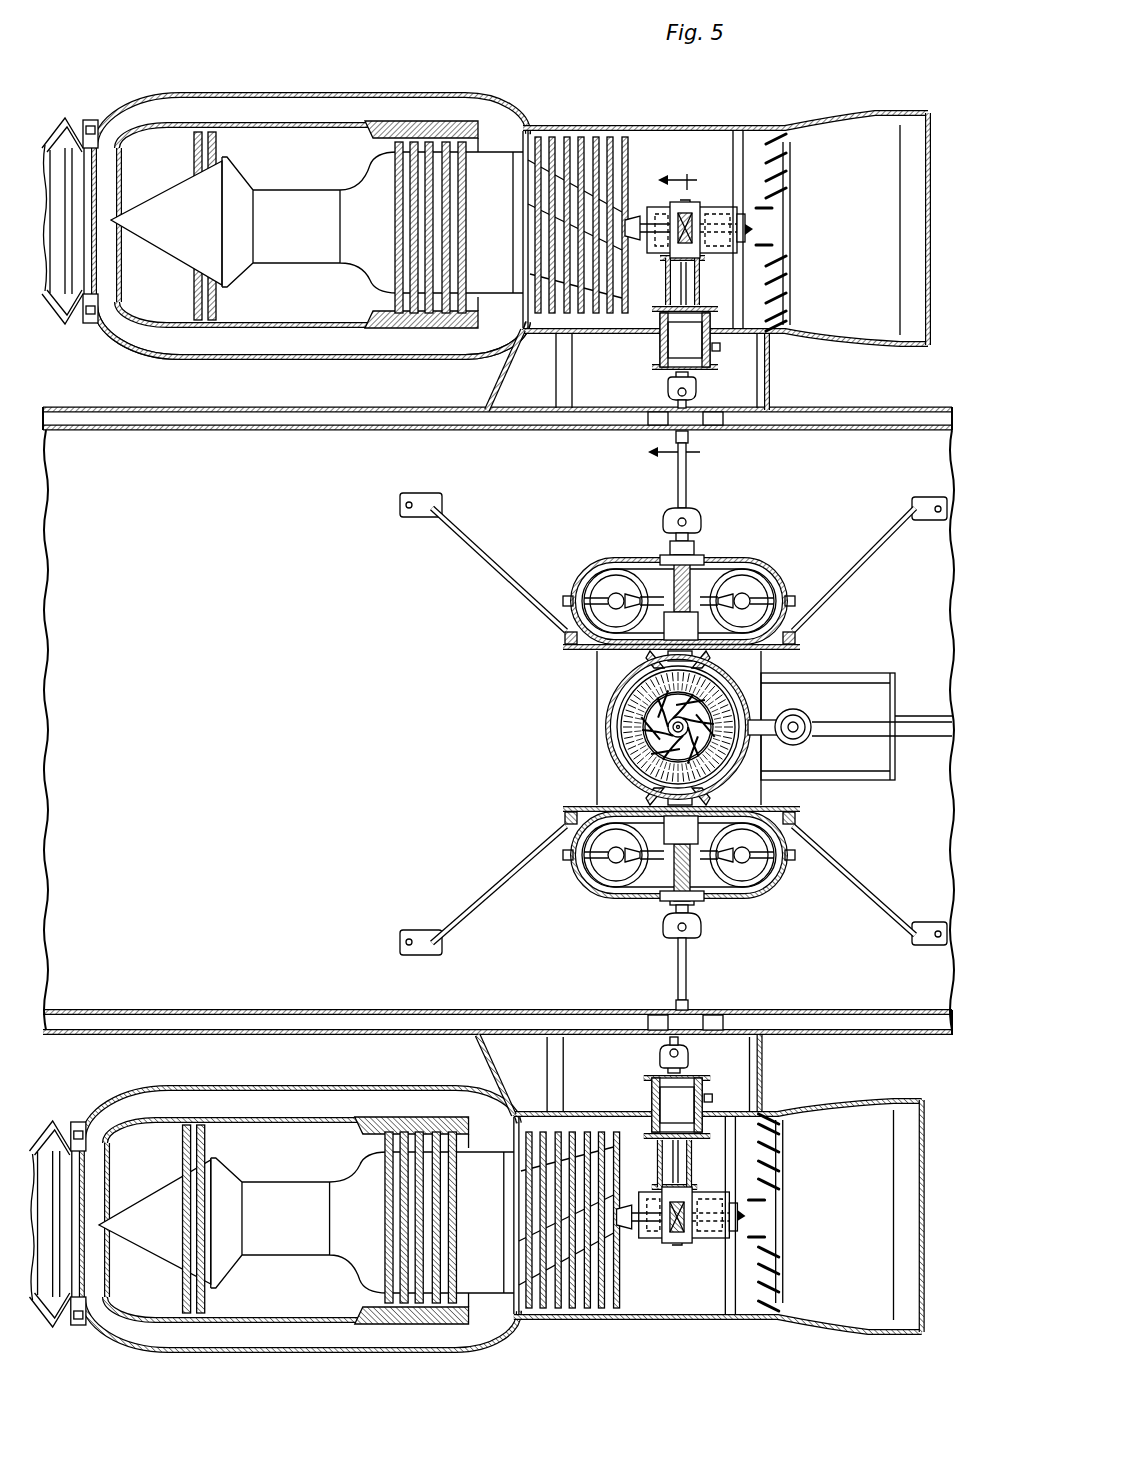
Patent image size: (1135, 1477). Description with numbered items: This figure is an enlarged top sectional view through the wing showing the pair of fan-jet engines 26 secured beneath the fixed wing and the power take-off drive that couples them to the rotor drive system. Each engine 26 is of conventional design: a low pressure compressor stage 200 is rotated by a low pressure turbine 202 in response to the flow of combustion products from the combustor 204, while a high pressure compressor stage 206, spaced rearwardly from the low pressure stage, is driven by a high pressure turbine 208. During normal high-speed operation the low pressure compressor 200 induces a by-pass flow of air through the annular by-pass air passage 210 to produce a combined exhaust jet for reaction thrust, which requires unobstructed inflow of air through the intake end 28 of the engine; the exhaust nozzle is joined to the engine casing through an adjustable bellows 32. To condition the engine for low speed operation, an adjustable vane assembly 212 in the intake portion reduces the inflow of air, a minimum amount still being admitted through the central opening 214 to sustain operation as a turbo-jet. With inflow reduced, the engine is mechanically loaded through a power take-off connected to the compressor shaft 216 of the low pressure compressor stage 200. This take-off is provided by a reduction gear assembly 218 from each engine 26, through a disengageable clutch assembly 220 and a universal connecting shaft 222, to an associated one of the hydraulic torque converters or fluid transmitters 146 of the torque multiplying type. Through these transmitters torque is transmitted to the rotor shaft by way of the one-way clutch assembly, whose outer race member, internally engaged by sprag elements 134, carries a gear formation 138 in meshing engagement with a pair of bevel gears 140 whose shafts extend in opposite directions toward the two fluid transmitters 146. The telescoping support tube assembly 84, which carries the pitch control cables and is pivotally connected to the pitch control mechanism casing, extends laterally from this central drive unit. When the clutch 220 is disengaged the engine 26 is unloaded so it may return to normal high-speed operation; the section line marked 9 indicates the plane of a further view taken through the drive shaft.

The fan-jet engine 26 is at (367, 86).
The intake end 28 is at (907, 312).
The adjustable bellows 32 is at (50, 142).
The section line 9 is at (680, 320).
The telescoping support tube assembly 84 is at (917, 728).
The sprag elements 134 is at (713, 760).
The gear formation 138 is at (627, 728).
The bevel gears 140 is at (648, 676).
The fluid transmitters 146 is at (786, 583).
The low pressure compressor stage 200 is at (578, 140).
The low pressure turbine 202 is at (187, 132).
The combustor 204 is at (282, 122).
The high pressure compressor stage 206 is at (453, 142).
The high pressure turbine 208 is at (208, 320).
The annular by-pass air passage 210 is at (330, 343).
The adjustable vane assembly 212 is at (790, 128).
The central opening 214 is at (773, 231).
The compressor shaft 216 is at (650, 208).
The reduction gear assembly 218 is at (708, 206).
The disengageable clutch assembly 220 is at (735, 358).
The universal connecting shaft 222 is at (682, 492).